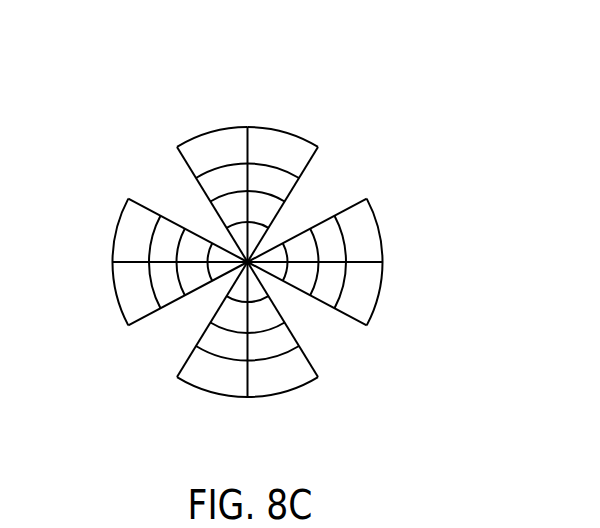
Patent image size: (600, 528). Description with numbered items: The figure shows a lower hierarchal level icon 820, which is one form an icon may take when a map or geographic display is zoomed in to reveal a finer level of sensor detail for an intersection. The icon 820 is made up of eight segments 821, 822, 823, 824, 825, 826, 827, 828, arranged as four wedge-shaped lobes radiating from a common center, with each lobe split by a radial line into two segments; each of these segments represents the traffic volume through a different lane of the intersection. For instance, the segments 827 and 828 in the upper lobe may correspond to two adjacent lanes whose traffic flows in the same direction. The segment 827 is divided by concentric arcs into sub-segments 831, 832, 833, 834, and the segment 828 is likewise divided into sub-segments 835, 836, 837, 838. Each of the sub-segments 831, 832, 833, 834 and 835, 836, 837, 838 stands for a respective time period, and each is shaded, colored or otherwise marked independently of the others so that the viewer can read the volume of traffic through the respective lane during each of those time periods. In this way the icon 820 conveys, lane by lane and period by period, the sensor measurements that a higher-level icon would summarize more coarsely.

The lower hierarchal level icon 820 is at (438, 75).
The segment 821 is at (385, 223).
The segment 822 is at (385, 300).
The segment 823 is at (282, 402).
The segment 824 is at (210, 402).
The segment 825 is at (112, 300).
The segment 826 is at (112, 225).
The segment 827 is at (207, 128).
The segment 828 is at (290, 128).
The sub-segment 831 is at (222, 216).
The sub-segment 832 is at (223, 210).
The sub-segment 833 is at (210, 185).
The sub-segment 834 is at (193, 161).
The sub-segment 835 is at (273, 216).
The sub-segment 836 is at (272, 210).
The sub-segment 837 is at (284, 185).
The sub-segment 838 is at (301, 161).